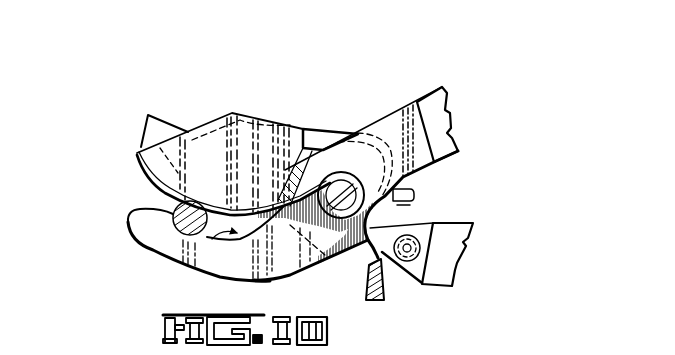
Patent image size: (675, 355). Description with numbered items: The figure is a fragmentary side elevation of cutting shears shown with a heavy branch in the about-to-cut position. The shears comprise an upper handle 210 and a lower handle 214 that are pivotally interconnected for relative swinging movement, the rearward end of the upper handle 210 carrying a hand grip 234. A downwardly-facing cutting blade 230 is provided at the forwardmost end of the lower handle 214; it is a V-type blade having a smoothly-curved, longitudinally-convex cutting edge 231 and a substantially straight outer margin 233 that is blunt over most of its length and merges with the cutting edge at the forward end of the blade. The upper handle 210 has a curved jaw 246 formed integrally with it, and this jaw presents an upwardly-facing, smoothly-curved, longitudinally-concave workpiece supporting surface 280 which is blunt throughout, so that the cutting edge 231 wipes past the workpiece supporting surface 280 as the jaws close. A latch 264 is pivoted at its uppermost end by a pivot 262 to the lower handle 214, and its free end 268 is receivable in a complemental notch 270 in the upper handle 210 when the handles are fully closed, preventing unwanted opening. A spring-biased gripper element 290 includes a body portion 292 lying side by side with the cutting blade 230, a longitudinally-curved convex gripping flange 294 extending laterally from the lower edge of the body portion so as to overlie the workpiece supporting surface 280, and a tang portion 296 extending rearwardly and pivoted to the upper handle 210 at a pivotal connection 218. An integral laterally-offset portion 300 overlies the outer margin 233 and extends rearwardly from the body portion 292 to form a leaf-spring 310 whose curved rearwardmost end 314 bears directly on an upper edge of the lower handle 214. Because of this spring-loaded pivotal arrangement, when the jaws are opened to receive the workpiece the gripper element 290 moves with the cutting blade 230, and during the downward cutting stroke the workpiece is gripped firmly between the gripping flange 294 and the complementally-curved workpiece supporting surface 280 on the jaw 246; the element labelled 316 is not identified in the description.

The upper handle 210 is at (402, 123).
The lower handle 214 is at (432, 229).
The pivotal connection 218 is at (339, 180).
The cutting blade 230 is at (160, 130).
The cutting edge 231 is at (259, 226).
The outer margin 233 is at (170, 120).
The hand grip 234 is at (432, 115).
The curved jaw 246 is at (316, 258).
The pivot 262 is at (417, 262).
The latch 264 is at (387, 272).
The free end of latch 268 is at (376, 276).
The notch 270 is at (380, 259).
The workpiece supporting surface 280 is at (200, 248).
The spring-biased gripper element 290 is at (269, 103).
The body portion 292 is at (271, 172).
The gripping flange 294 is at (217, 200).
The tang portion 296 is at (313, 165).
The laterally-offset portion 300 is at (237, 110).
The leaf-spring 310 is at (378, 128).
The rearwardmost end of leaf-spring 314 is at (408, 190).
The stop pin 316 is at (398, 205).